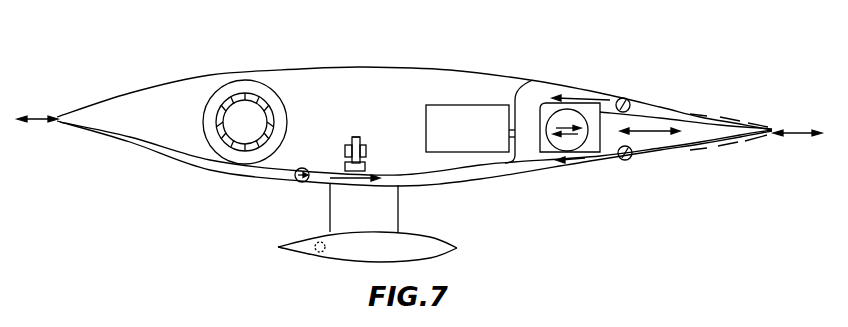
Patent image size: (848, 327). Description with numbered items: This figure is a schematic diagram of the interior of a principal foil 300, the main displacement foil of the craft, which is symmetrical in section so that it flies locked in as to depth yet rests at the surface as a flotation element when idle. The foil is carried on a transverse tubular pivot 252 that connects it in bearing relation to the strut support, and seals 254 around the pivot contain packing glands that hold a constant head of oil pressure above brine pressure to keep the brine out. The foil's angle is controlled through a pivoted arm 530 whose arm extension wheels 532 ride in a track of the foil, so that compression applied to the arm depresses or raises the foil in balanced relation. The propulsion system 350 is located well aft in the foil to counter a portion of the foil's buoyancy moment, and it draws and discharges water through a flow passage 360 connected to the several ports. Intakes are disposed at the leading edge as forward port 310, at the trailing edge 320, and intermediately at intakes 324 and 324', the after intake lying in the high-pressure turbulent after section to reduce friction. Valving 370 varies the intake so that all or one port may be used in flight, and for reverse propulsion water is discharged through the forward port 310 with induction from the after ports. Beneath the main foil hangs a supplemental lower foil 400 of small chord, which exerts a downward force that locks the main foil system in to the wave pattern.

The principal foil 300 is at (363, 62).
The forward port 310 is at (57, 113).
The trailing edge 320 is at (776, 131).
The after port 324 is at (729, 111).
The intermediate intake 324' is at (728, 156).
The transverse tubular pivot 252 is at (256, 138).
The seal 254 is at (283, 115).
The propulsion system 350 is at (591, 146).
The flow channel 360 is at (536, 157).
The valving 370 is at (298, 181).
The lower foil 400 is at (314, 239).
The pivoted arm 530 is at (347, 152).
The arm extension wheel 532 is at (360, 136).